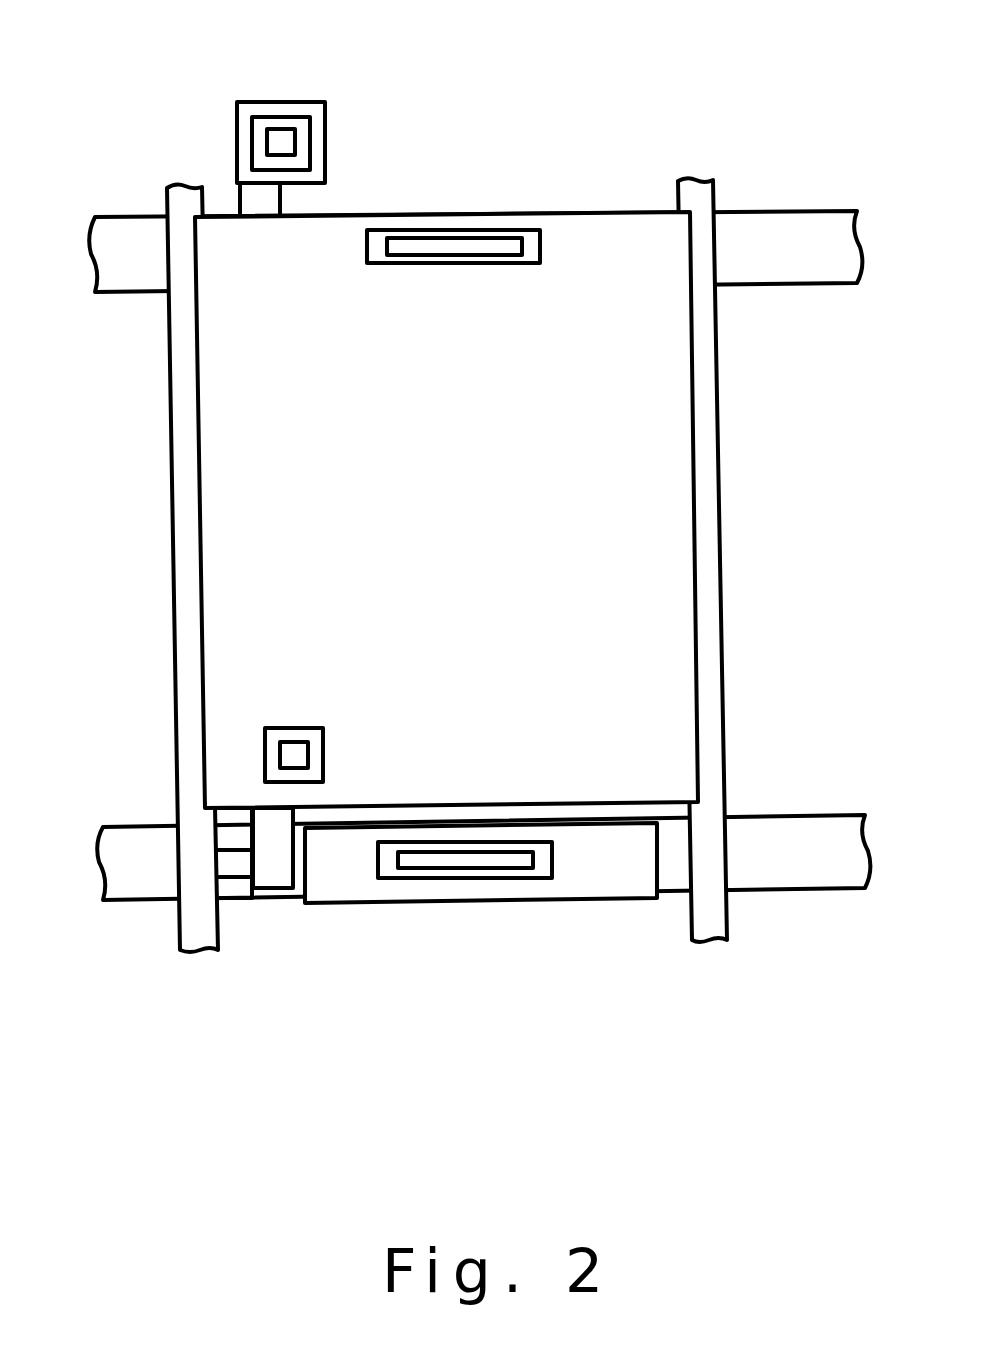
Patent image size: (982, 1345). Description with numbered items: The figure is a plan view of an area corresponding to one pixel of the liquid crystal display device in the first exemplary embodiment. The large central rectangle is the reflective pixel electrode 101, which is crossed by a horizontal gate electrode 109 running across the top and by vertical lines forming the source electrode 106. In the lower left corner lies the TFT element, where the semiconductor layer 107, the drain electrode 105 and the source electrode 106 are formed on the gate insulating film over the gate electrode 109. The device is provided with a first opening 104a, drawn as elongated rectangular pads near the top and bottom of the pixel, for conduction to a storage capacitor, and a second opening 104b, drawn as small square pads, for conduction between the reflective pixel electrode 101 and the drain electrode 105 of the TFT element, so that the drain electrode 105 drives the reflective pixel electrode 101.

The reflective pixel electrode 101 is at (335, 233).
The first opening 104a is at (478, 227).
The second opening 104b is at (282, 123).
The drain electrode 105 is at (282, 867).
The source electrode 106 is at (200, 936).
The semiconductor layer 107 is at (230, 870).
The gate electrode 109 is at (768, 227).